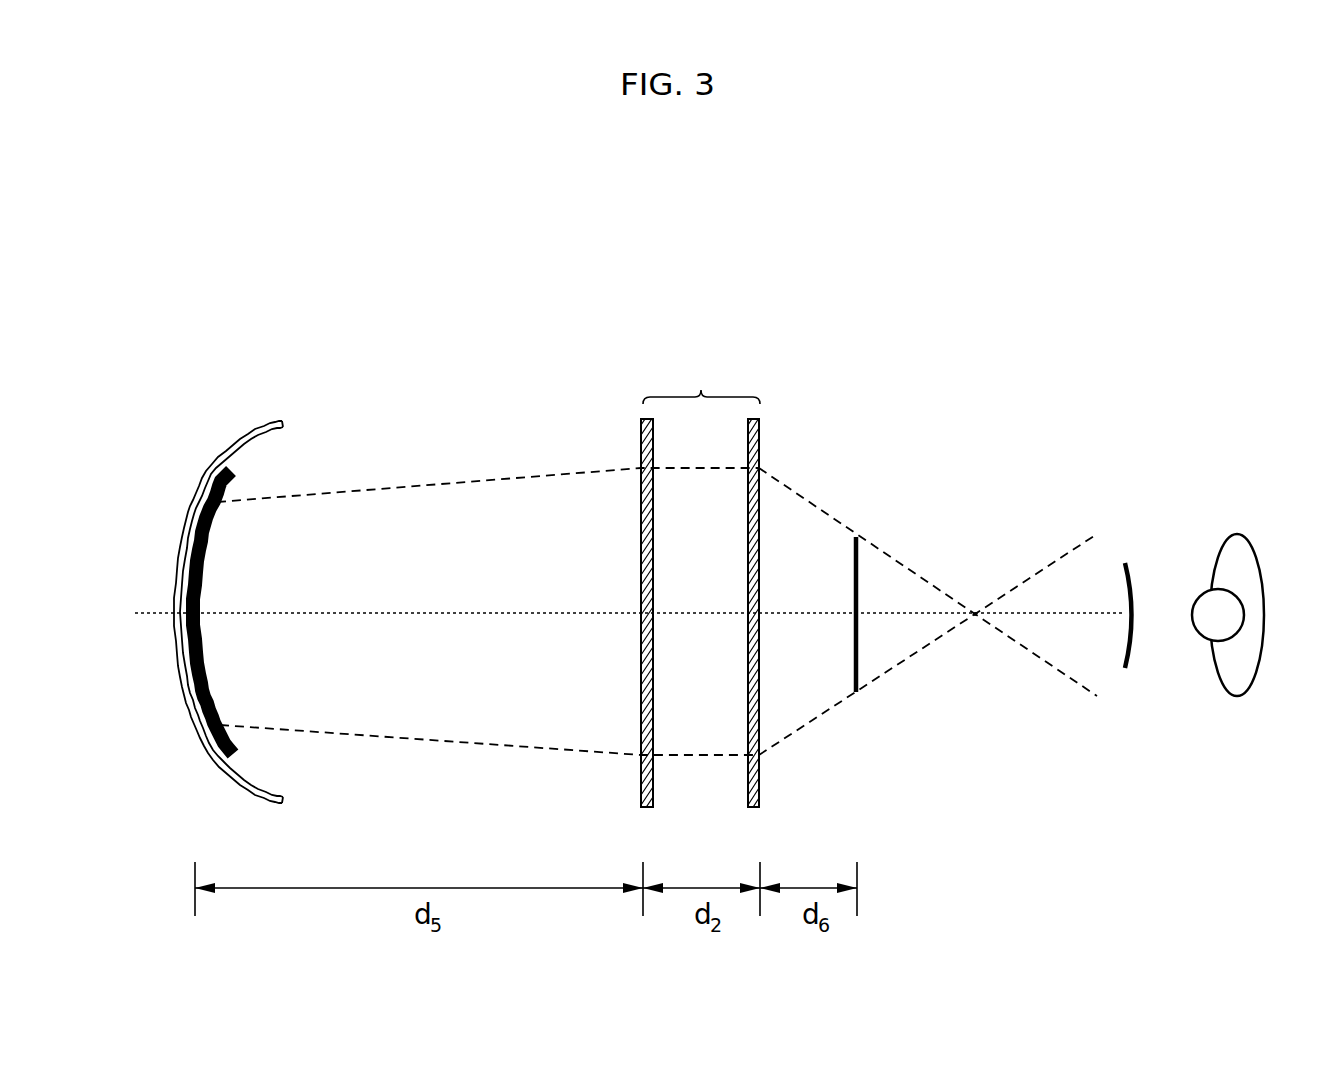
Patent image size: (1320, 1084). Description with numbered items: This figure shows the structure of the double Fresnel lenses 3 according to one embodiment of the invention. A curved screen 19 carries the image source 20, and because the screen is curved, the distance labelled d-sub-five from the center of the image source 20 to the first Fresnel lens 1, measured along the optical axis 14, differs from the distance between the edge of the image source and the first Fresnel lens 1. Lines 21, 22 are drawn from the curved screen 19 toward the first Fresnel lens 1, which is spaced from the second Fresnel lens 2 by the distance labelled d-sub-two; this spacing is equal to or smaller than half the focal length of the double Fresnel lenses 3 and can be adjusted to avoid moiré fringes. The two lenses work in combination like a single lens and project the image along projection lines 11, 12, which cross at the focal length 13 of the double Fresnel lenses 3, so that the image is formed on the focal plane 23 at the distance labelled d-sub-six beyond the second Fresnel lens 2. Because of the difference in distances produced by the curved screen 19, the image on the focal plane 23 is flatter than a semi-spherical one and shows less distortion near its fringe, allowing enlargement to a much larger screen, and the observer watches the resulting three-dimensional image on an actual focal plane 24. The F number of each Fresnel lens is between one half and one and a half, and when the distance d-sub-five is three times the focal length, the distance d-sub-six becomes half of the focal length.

The first Fresnel lens 1 is at (641, 516).
The second Fresnel lens 2 is at (760, 522).
The double Fresnel lenses 3 is at (701, 376).
The projection line 11 is at (1062, 558).
The projection line 12 is at (1062, 678).
The focal length 13 is at (975, 607).
The optical axis 14 is at (146, 606).
The curved screen 19 is at (226, 449).
The image source 20 is at (231, 478).
The light ray 21 is at (397, 736).
The light ray 22 is at (410, 487).
The focal plane 23 is at (861, 545).
The actual focal plane 24 is at (1131, 573).